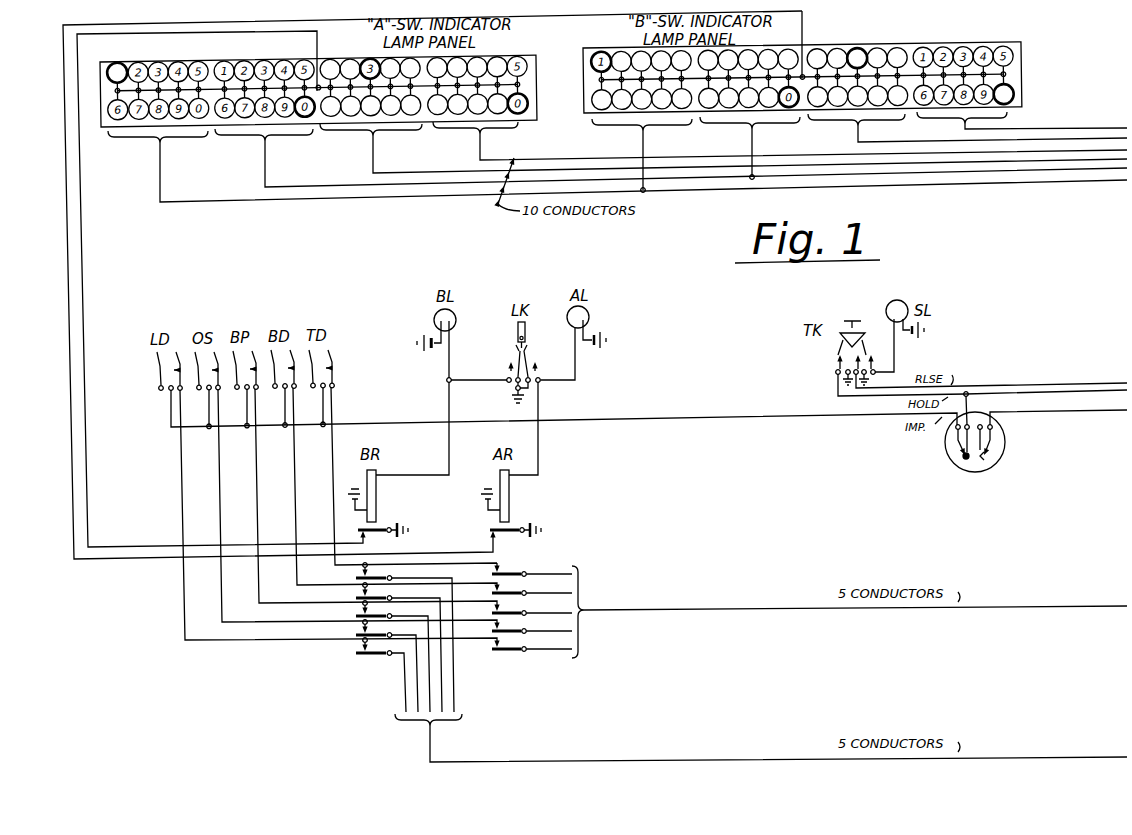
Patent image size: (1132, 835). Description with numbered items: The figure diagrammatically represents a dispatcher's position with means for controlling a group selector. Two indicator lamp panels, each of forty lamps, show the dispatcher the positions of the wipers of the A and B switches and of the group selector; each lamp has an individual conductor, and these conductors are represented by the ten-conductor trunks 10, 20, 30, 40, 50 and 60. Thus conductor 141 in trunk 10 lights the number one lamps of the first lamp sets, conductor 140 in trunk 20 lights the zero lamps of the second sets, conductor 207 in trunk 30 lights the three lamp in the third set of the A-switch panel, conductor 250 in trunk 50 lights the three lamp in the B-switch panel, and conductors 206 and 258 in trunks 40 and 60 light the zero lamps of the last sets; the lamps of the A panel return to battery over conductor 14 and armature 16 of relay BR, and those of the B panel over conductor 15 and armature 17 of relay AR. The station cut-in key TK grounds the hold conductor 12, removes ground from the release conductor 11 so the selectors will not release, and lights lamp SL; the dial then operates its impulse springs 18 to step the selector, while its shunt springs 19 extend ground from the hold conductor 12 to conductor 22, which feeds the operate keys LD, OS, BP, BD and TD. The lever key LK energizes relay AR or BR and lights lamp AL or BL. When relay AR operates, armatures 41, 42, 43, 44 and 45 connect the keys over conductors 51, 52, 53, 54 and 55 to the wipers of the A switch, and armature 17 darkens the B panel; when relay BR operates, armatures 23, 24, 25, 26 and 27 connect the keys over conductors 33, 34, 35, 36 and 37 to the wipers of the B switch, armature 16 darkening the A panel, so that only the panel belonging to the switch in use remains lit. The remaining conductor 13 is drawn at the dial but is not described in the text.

The ten-conductor trunk 10 is at (176, 202).
The ten-conductor trunk 20 is at (286, 187).
The ten-conductor trunk 30 is at (404, 173).
The ten-conductor trunk 40 is at (548, 159).
The ten-conductor trunk 50 is at (888, 142).
The ten-conductor trunk 60 is at (1071, 128).
The release conductor 11 is at (1020, 388).
The hold conductor 12 is at (1058, 392).
The impulse conductor 13 is at (1078, 410).
The conductor 14 is at (84, 289).
The conductor 15 is at (67, 289).
The armature 16 is at (372, 533).
The armature 17 is at (504, 533).
The impulse springs 18 is at (993, 460).
The shunt springs 19 is at (962, 457).
The conductor 22 is at (623, 416).
The armature 23 is at (356, 580).
The armature 24 is at (356, 600).
The armature 25 is at (356, 618).
The armature 26 is at (356, 637).
The armature 27 is at (356, 655).
The conductor 33 is at (452, 668).
The conductor 34 is at (440, 684).
The conductor 35 is at (428, 662).
The conductor 36 is at (416, 678).
The conductor 37 is at (405, 695).
The armature 41 is at (509, 567).
The armature 42 is at (509, 586).
The armature 43 is at (509, 606).
The armature 44 is at (509, 624).
The armature 45 is at (509, 642).
The conductor 51 is at (544, 561).
The conductor 52 is at (544, 580).
The conductor 53 is at (544, 600).
The conductor 54 is at (544, 618).
The conductor 55 is at (544, 636).
The conductor 140 is at (308, 124).
The conductor 141 is at (130, 62).
The conductor 206 is at (521, 120).
The conductor 207 is at (358, 61).
The conductor 250 is at (873, 47).
The conductor 258 is at (1024, 100).